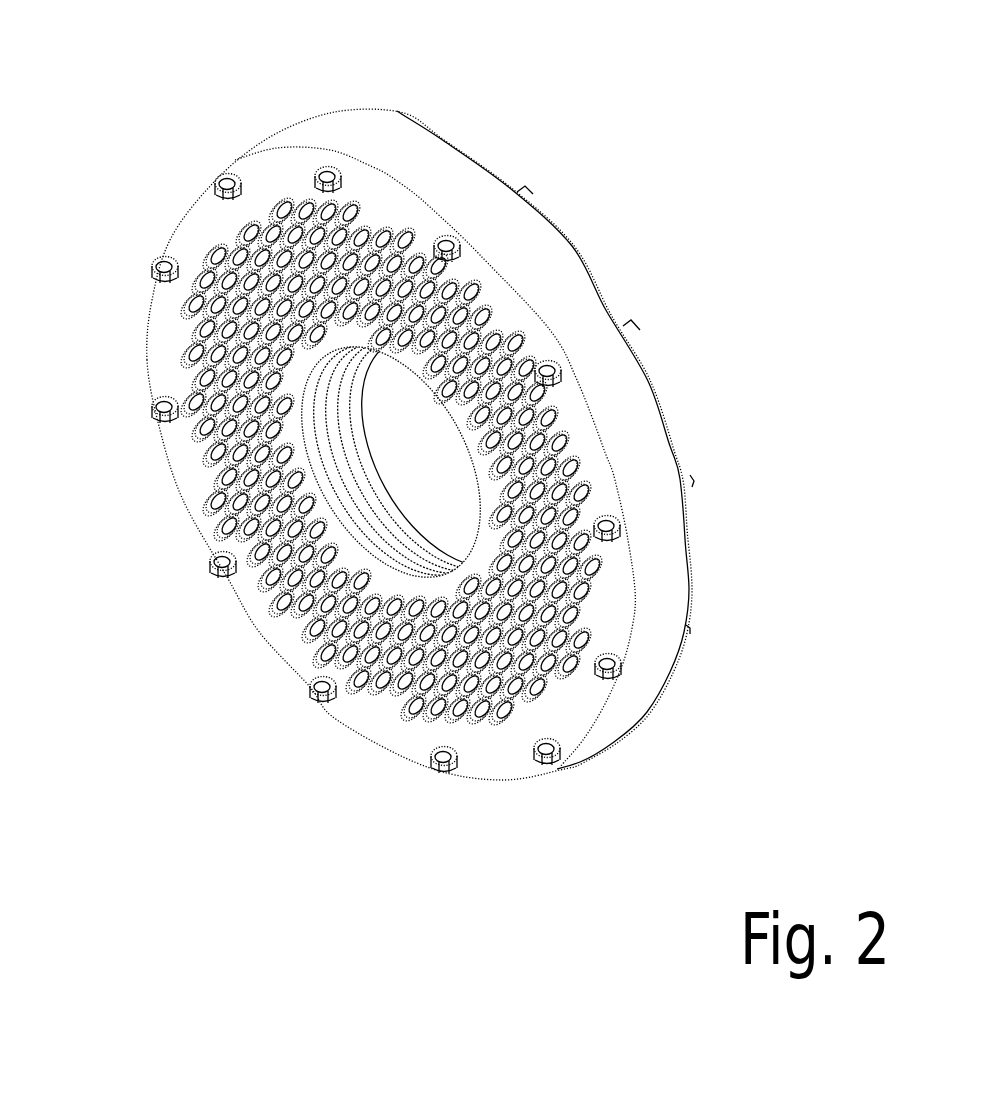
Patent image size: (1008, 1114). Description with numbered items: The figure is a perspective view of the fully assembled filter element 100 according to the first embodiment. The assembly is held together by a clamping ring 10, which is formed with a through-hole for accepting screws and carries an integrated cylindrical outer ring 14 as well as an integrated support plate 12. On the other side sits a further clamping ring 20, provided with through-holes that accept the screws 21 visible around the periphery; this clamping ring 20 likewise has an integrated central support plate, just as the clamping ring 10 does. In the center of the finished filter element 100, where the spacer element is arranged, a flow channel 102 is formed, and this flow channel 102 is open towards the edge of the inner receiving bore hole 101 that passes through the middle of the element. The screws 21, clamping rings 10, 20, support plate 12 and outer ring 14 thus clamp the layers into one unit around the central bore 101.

The filter element 100 is at (138, 110).
The clamping ring 10 is at (278, 170).
The support plate 12 is at (280, 540).
The cylindrical outer ring 14 is at (360, 137).
The clamping ring 20 is at (437, 138).
The screws 21 is at (228, 176).
The inner receiving bore hole 101 is at (428, 472).
The flow channel 102 is at (360, 500).